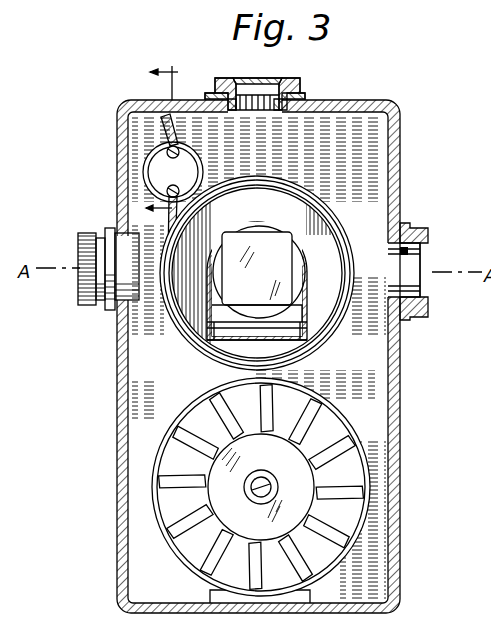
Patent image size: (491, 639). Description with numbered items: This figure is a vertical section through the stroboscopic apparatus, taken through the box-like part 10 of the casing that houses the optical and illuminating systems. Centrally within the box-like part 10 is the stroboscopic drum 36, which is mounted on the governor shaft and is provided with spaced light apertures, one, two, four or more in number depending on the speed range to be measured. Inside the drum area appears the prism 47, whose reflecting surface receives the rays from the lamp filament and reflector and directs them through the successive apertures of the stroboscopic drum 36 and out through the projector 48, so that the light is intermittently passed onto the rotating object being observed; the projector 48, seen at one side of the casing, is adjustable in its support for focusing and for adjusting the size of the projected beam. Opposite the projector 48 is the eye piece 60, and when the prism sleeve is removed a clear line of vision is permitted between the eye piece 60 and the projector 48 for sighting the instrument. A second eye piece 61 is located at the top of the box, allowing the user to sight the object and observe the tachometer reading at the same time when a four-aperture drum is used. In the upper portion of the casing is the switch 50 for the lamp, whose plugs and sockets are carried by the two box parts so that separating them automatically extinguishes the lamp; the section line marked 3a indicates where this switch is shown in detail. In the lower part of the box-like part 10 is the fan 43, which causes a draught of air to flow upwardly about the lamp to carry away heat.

The section line 3a is at (160, 140).
The box-like part 10 is at (398, 152).
The eye piece 61 is at (278, 80).
The eye piece 60 is at (420, 266).
The projector 48 is at (82, 288).
The switch 50 is at (150, 178).
The stroboscopic drum 36 is at (322, 206).
The prism 47 is at (287, 257).
The fan 43 is at (206, 560).